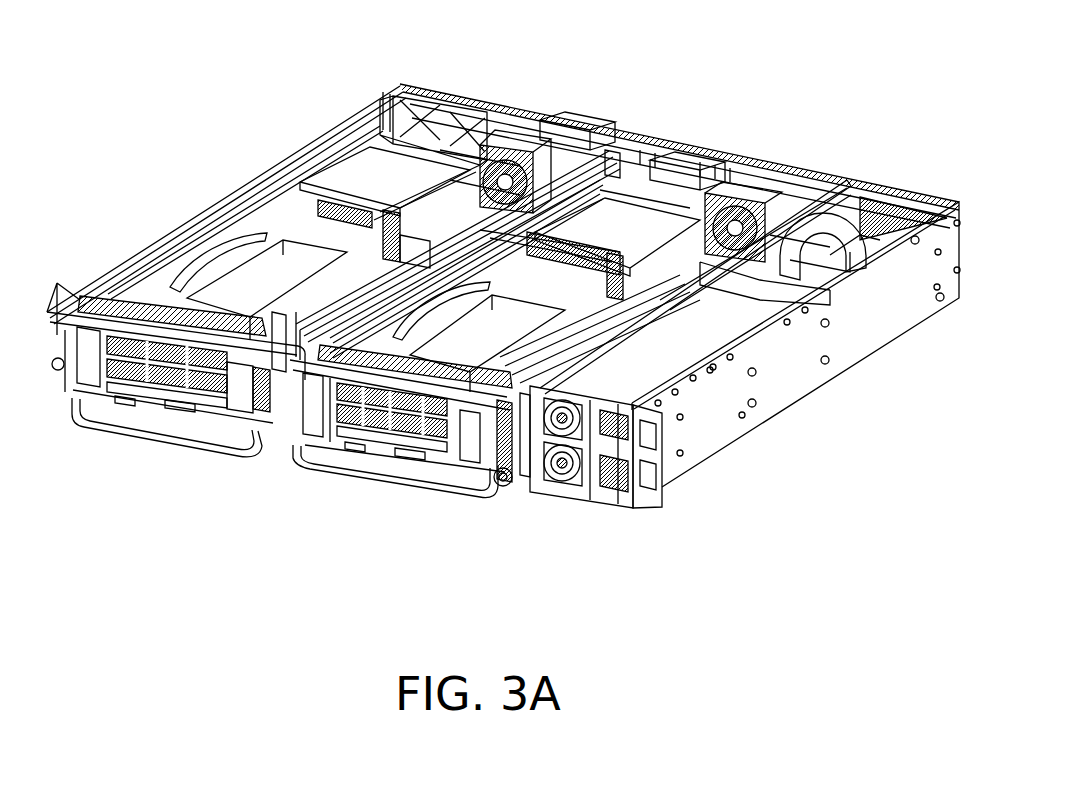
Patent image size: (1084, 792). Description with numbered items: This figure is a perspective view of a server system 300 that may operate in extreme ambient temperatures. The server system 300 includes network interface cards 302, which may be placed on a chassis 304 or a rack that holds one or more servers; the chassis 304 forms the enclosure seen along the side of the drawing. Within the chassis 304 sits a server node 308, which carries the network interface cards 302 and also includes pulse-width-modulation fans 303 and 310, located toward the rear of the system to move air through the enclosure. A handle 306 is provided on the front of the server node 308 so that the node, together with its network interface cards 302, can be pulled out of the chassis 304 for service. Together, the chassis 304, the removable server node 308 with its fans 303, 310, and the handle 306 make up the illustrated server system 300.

The server system 300 is at (688, 75).
The network interface cards 302 is at (150, 367).
The PWM fan 303 is at (515, 175).
The chassis 304 is at (727, 422).
The handle 306 is at (343, 478).
The server node 308 is at (470, 517).
The PWM fan 310 is at (866, 148).